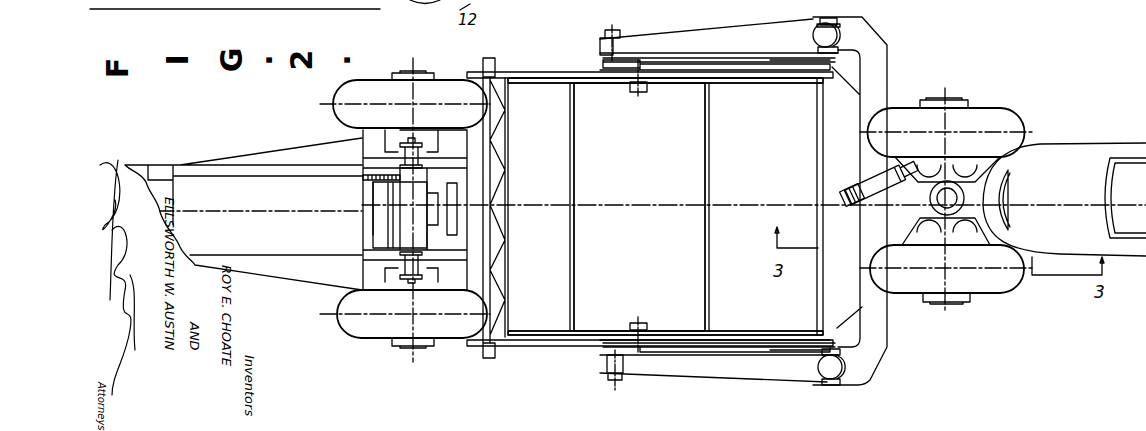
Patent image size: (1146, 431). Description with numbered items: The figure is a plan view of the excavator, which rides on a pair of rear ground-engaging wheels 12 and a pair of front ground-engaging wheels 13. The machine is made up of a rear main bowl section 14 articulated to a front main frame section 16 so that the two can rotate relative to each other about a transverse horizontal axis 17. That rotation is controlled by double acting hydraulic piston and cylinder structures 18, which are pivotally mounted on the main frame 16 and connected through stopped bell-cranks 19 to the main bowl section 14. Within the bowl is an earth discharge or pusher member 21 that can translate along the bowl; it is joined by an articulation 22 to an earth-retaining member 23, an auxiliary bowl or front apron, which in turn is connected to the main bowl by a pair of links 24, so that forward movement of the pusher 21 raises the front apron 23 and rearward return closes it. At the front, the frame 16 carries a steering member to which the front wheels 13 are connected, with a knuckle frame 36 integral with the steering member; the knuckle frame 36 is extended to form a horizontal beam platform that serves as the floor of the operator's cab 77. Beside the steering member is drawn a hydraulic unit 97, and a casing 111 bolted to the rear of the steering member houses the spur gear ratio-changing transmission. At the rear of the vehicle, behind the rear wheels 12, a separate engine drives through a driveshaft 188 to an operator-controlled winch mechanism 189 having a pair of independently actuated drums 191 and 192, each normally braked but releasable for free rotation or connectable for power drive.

The rear ground-engaging wheels 12 is at (340, 95).
The front ground-engaging wheels 13 is at (998, 112).
The main bowl section 14 is at (565, 72).
The main frame section 16 is at (698, 31).
The transverse horizontal axis 17 is at (617, 37).
The double acting hydraulic piston and cylinder structures 18 is at (820, 25).
The bell-cranks 19 is at (838, 63).
The pusher member 21 is at (510, 182).
The articulation 22 is at (530, 78).
The earth-retaining member 23 is at (820, 174).
The links 24 is at (681, 80).
The knuckle frame 36 is at (975, 230).
The operator's cab 77 is at (1103, 147).
The hydraulic cylinder 97 is at (904, 194).
The casing 111 is at (858, 217).
The driveshaft 188 is at (368, 178).
The winch mechanism 189 is at (403, 232).
The drum 191 is at (416, 143).
The drum 192 is at (416, 279).